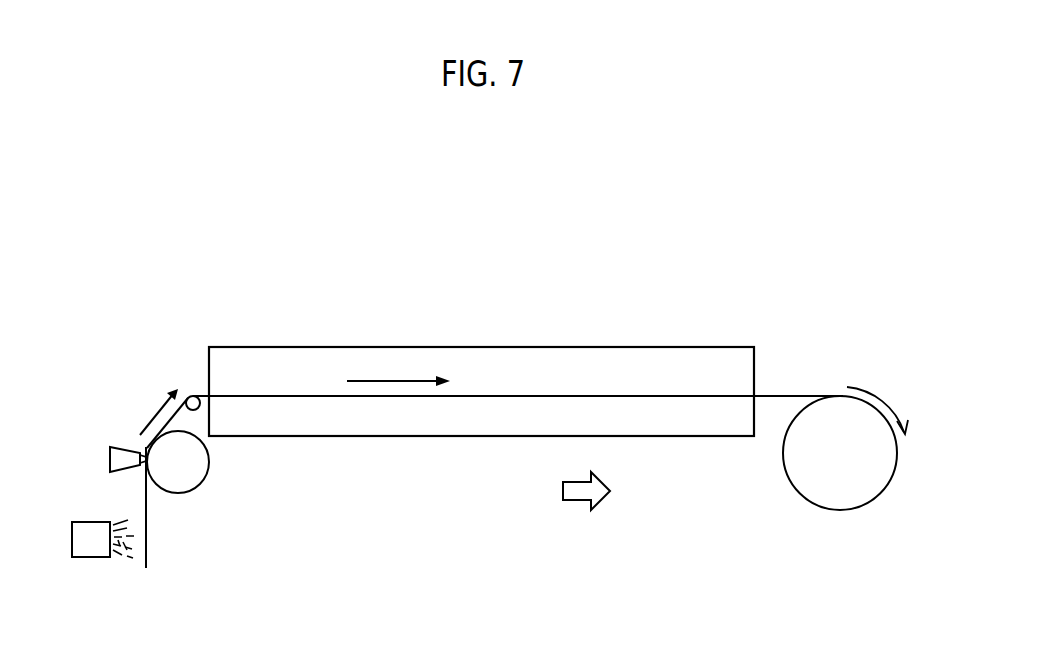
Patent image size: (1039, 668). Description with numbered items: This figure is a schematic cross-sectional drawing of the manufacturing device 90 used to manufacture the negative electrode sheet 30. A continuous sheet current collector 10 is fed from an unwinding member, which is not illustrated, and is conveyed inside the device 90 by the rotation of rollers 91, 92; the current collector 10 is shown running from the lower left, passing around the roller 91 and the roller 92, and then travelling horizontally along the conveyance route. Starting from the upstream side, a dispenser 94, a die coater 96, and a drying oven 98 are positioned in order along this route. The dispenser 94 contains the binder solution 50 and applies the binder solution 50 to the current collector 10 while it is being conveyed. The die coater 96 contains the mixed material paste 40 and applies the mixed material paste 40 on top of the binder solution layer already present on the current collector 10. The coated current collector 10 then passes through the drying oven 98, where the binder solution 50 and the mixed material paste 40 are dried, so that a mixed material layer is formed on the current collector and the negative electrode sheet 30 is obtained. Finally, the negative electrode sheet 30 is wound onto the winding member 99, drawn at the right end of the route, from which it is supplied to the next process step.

The manufacturing device 90 is at (717, 245).
The drying oven 98 is at (562, 347).
The negative electrode sheet 30 is at (787, 395).
The roller 92 is at (187, 394).
The roller 91 is at (187, 463).
The continuous sheet current collector 10 is at (147, 520).
The die coater 96 is at (110, 458).
The mixed material paste 40 is at (134, 464).
The dispenser 94 is at (80, 548).
The binder solution 50 is at (125, 557).
The winding member 99 is at (842, 502).